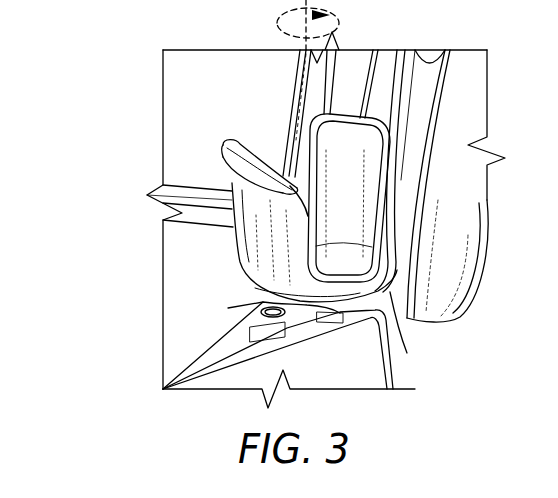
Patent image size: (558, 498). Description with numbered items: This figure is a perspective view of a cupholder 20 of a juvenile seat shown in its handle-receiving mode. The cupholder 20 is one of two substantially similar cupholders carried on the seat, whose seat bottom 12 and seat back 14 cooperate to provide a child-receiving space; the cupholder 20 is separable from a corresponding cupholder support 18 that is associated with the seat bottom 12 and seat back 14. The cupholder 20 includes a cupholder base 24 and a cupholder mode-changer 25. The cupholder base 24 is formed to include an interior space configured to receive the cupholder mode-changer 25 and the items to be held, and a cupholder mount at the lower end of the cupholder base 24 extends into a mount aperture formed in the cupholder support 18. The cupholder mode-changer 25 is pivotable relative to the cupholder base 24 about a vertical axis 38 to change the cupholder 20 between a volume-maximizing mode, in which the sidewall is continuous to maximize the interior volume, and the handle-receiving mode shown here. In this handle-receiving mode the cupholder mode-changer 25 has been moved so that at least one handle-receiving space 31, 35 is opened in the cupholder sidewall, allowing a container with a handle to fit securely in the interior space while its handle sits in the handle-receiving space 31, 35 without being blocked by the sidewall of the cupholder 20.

The seat bottom 12 is at (178, 341).
The seat back 14 is at (217, 78).
The cupholder support 18 is at (246, 314).
The cupholder 20 is at (221, 132).
The cupholder base 24 is at (251, 262).
The cupholder mode-changer 25 is at (383, 114).
The handle-receiving space 31 is at (364, 205).
The handle-receiving space 35 is at (275, 134).
The vertical axis 38 is at (334, 13).